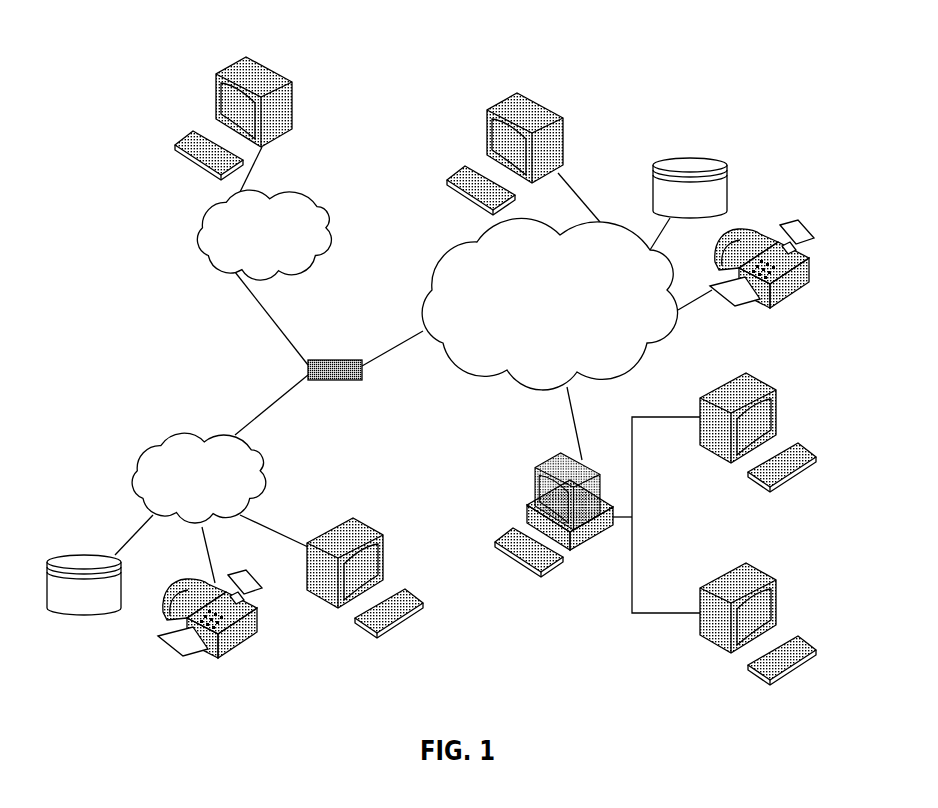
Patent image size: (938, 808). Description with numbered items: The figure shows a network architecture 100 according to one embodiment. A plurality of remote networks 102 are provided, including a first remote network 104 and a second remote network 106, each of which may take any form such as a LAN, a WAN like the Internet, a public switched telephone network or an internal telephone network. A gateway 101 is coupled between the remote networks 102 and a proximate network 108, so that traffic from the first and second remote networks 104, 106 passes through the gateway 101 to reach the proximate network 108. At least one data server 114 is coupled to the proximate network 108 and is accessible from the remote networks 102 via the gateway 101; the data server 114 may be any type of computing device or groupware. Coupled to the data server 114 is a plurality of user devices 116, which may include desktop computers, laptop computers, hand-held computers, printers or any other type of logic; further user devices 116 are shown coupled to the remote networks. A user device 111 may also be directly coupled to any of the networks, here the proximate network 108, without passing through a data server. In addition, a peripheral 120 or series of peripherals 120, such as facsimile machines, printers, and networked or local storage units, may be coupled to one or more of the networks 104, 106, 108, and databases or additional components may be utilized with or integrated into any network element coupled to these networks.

The network architecture 100 is at (152, 42).
The gateway 101 is at (318, 360).
The remote networks 102 is at (176, 292).
The first remote network 104 is at (134, 458).
The second remote network 106 is at (326, 212).
The proximate network 108 is at (645, 362).
The user device 111 is at (563, 122).
The data server 114 is at (537, 476).
The user devices 116 is at (292, 94).
The peripheral 120 is at (727, 168).